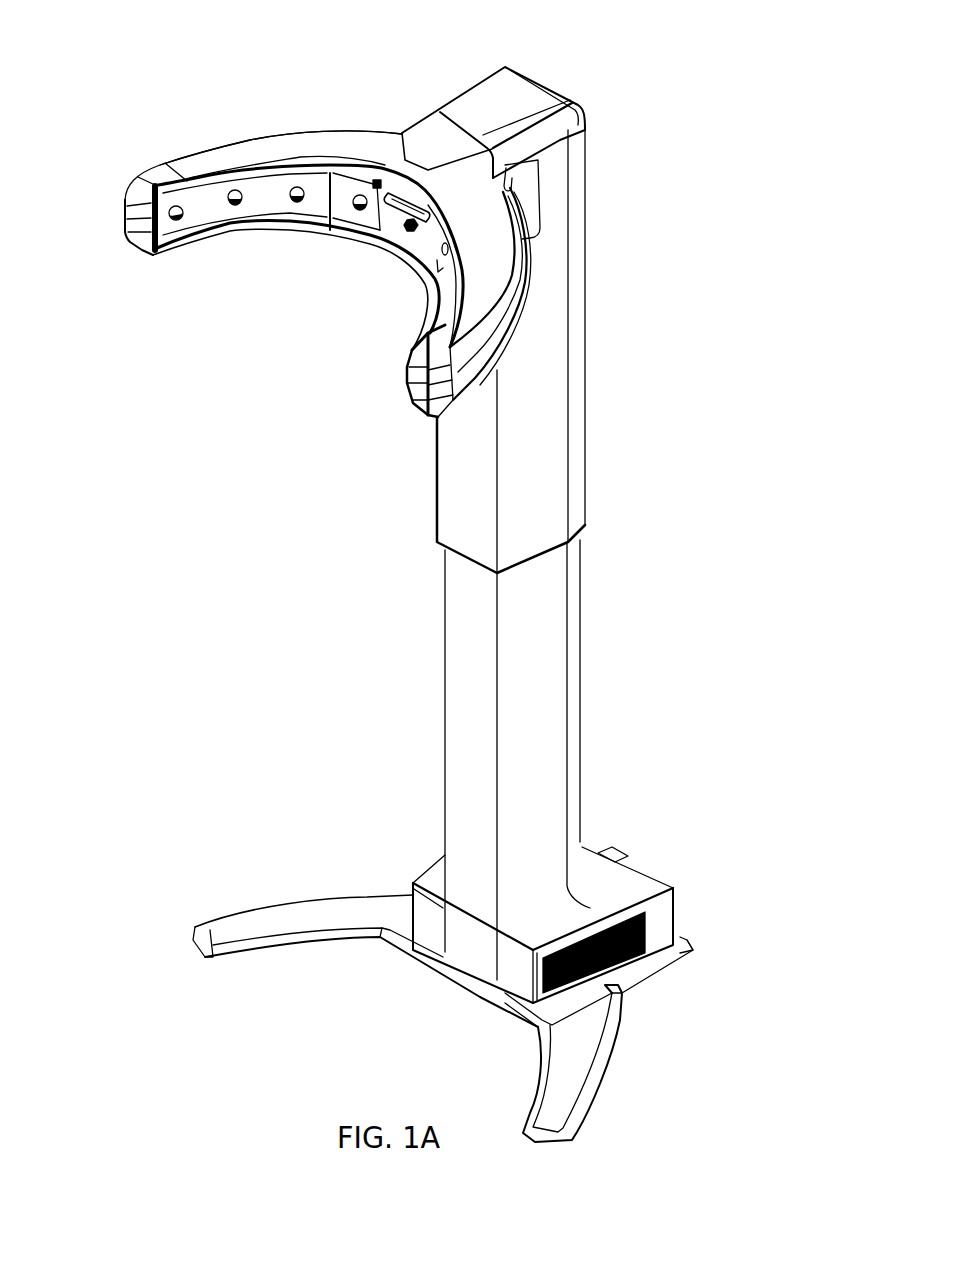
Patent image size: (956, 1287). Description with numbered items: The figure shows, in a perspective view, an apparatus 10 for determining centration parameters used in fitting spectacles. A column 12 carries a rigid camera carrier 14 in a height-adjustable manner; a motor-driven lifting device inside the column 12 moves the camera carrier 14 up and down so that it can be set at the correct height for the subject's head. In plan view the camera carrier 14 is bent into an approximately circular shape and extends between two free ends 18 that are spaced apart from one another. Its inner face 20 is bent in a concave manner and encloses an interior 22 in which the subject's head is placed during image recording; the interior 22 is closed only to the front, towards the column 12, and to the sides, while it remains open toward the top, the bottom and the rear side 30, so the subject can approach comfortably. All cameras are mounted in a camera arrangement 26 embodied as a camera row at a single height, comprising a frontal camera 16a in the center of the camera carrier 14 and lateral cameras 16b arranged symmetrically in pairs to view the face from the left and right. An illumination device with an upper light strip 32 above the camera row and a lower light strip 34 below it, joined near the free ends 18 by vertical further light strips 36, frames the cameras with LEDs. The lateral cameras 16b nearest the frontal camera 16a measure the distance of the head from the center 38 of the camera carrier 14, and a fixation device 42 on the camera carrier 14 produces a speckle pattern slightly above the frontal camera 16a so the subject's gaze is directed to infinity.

The apparatus 10 is at (636, 402).
The column 12 is at (555, 738).
The camera carrier 14 is at (260, 143).
The frontal camera 16a is at (430, 232).
The lateral cameras 16b is at (233, 205).
The free ends 18 is at (123, 213).
The inner face 20 is at (382, 184).
The interior 22 is at (262, 366).
The camera arrangement 26 is at (132, 252).
The rear side 30 is at (302, 403).
The upper light strip 32 is at (192, 183).
The lower light strip 34 is at (252, 235).
The further light strip 36 is at (150, 253).
The center 38 is at (418, 243).
The fixation device 42 is at (398, 182).